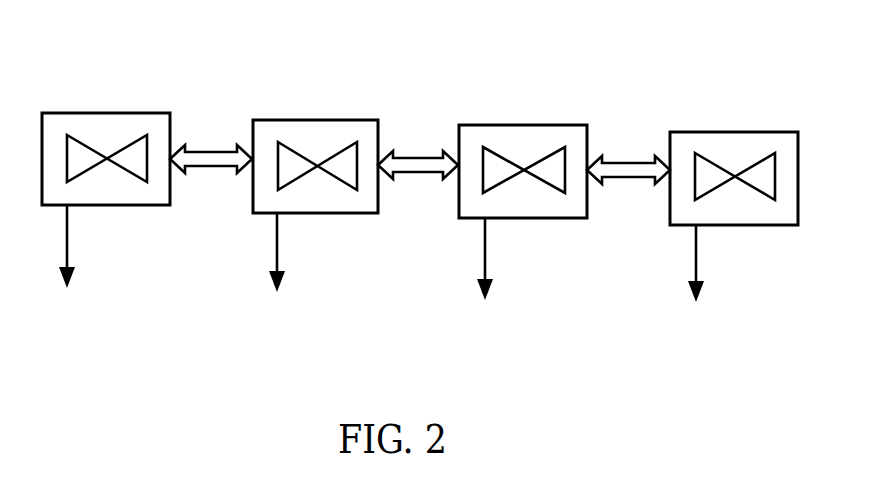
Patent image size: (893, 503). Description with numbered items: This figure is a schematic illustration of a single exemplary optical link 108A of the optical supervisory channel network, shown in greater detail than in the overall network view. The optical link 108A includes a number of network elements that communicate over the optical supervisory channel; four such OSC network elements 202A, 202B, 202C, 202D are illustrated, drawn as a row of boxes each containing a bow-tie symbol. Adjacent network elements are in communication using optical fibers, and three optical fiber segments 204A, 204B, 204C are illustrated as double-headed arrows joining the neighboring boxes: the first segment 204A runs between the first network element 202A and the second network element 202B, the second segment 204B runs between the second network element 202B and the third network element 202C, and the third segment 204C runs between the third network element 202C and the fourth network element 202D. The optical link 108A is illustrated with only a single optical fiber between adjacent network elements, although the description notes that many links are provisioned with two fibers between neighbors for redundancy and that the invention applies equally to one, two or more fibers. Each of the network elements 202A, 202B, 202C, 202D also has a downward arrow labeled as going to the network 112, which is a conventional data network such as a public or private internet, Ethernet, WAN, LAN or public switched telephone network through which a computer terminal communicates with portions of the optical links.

The optical link 108A is at (167, 70).
The OSC network element 202A is at (118, 206).
The OSC network element 202B is at (328, 214).
The OSC network element 202C is at (535, 219).
The OSC network element 202D is at (750, 226).
The optical fiber segment 204A is at (200, 173).
The optical fiber segment 204B is at (410, 179).
The optical fiber segment 204C is at (620, 184).
The network 112 is at (379, 297).